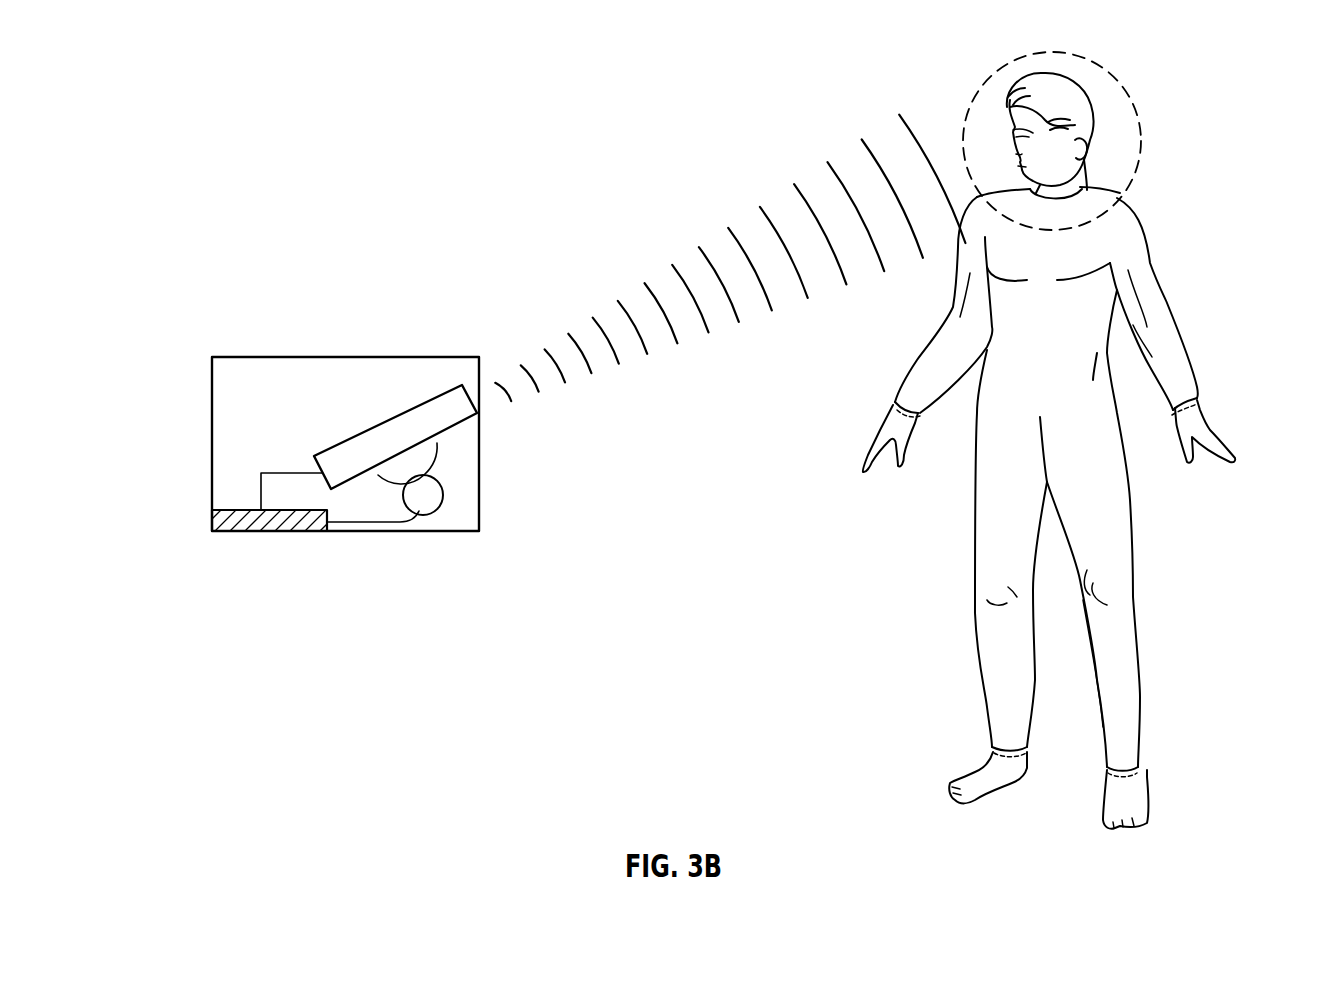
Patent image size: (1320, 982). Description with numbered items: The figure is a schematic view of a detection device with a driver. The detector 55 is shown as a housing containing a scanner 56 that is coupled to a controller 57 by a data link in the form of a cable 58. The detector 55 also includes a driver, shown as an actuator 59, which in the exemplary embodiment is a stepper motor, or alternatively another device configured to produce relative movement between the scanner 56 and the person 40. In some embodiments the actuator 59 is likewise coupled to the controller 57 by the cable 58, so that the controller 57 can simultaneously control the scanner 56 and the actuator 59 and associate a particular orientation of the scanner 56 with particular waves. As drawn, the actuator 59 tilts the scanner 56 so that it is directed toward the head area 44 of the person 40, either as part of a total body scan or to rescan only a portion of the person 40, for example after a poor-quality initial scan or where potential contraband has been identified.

The person 40 is at (1158, 215).
The head area 44 is at (1118, 88).
The detector 55 is at (219, 247).
The scanner 56 is at (388, 417).
The controller 57 is at (273, 533).
The cable 58 is at (261, 492).
The actuator 59 is at (444, 469).